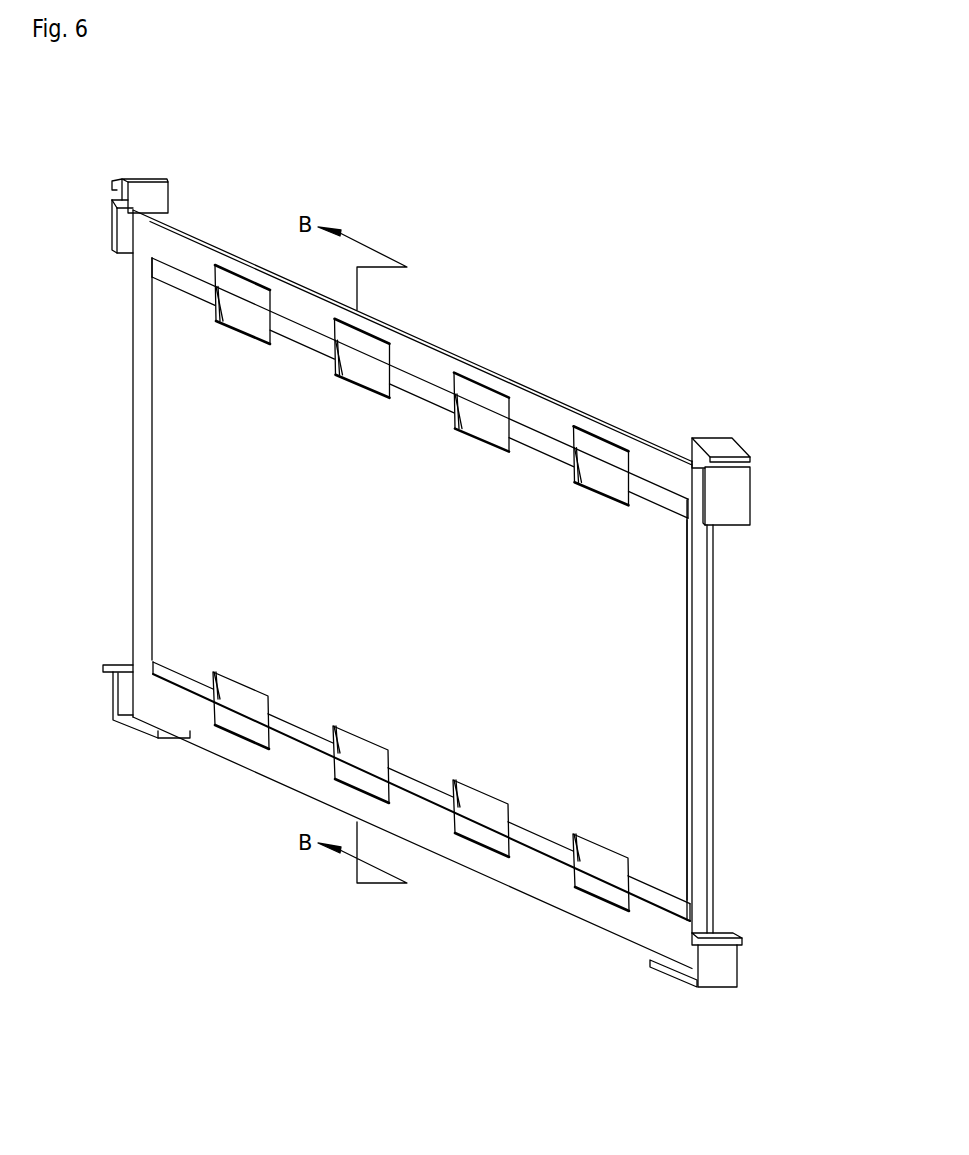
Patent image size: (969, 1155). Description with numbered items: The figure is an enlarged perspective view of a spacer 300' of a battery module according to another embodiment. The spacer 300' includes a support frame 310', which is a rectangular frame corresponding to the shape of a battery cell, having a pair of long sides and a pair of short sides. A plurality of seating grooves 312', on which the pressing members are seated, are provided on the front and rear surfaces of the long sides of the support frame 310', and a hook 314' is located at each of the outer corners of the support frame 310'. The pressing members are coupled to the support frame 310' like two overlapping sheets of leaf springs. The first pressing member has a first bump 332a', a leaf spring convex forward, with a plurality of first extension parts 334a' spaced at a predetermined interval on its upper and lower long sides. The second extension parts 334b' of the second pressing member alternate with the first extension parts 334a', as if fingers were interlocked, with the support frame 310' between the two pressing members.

The spacer 300' is at (460, 543).
The support frame 310' is at (412, 561).
The seating grooves 312' is at (422, 385).
The hook 314' is at (767, 685).
The first bump 332a' is at (419, 624).
The first extension parts 334a' is at (507, 589).
The second extension parts 334b' is at (421, 832).